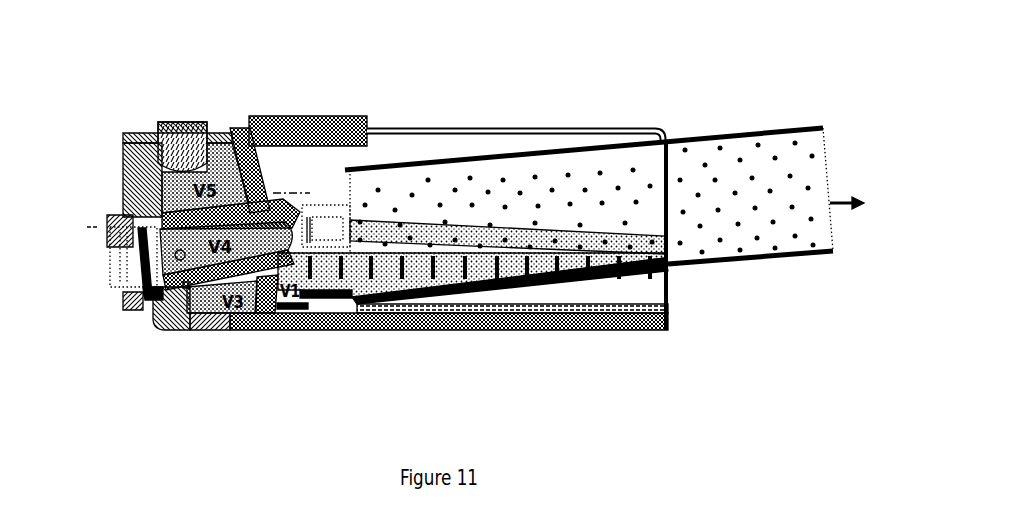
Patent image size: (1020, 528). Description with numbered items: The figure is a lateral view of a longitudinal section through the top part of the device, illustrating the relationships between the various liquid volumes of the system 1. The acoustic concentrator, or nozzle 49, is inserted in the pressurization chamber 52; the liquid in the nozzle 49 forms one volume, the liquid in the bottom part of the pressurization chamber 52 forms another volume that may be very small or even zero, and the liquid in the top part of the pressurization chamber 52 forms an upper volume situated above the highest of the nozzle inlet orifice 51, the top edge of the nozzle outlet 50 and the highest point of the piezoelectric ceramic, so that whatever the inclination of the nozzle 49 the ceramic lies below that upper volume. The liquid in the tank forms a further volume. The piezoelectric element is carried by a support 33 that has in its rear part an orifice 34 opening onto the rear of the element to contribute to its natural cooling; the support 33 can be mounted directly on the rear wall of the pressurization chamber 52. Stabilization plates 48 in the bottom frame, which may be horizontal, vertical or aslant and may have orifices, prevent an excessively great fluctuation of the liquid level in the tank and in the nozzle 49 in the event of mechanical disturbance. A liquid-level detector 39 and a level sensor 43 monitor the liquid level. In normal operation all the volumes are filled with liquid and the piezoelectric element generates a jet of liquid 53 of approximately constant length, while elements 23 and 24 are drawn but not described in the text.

The system 1 is at (718, 356).
The flow channel 23 is at (707, 132).
The gas supply block 24 is at (303, 130).
The piezoelectric element support 33 is at (113, 233).
The orifice in support 34 is at (137, 247).
The liquid-level detector 39 is at (318, 216).
The level sensor 43 is at (183, 132).
The stabilization plate 48 is at (407, 306).
The acoustic concentrator (nozzle) 49 is at (260, 218).
The nozzle outlet 50 is at (292, 234).
The nozzle inlet orifice 51 is at (182, 256).
The pressurization chamber 52 is at (175, 188).
The jet of liquid 53 is at (373, 228).